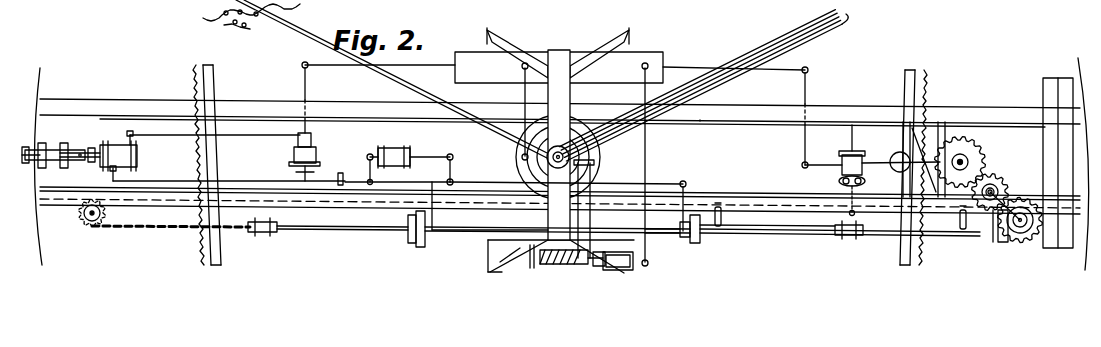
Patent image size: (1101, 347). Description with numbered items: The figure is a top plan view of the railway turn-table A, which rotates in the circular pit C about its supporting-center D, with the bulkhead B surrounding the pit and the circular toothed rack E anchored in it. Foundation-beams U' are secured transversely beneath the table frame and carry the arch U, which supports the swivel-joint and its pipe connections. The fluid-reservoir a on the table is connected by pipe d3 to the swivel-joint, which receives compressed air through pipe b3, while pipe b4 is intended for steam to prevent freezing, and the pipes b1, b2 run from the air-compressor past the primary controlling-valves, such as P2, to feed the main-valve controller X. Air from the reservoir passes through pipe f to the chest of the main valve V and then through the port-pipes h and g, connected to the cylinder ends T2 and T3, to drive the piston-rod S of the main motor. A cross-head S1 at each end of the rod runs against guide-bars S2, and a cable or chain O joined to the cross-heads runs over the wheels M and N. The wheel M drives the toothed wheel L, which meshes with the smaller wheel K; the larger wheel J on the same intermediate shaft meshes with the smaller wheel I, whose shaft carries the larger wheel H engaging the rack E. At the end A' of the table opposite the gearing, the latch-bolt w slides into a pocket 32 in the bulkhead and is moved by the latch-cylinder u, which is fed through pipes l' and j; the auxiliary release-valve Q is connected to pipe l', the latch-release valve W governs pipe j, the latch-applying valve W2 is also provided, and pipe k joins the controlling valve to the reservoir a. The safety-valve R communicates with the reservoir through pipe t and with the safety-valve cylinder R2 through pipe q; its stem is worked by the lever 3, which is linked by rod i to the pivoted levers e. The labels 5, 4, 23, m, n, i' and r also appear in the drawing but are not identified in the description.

The end of the table A' is at (557, 166).
The bulkhead B is at (40, 238).
The circular pit C is at (471, 3).
The supporting-center D is at (542, 3).
The toothed wheel L is at (1026, 244).
The wheel M is at (1008, 240).
The circular toothed rack E is at (194, 82).
The flexible vine/cable 5 is at (245, 16).
The cable connection 4 is at (232, 30).
The fluid-reservoir a is at (557, 58).
The foundation-beams U' is at (559, 149).
The main valve V is at (510, 36).
The arch U is at (558, 145).
The pipe d3 is at (520, 70).
The pipe f is at (646, 150).
The pipe b1 is at (750, 56).
The pipe b2 is at (790, 38).
The pipe b3 is at (822, 28).
The pipe b4 is at (711, 81).
The pipe k is at (308, 92).
The latch-applying valve W2 is at (290, 160).
The valve base 23 is at (288, 173).
The pipe j is at (176, 136).
The pipe l' is at (227, 167).
The latch-cylinder u is at (113, 146).
The latch-bolt w is at (55, 150).
The pocket 32 is at (22, 163).
The auxiliary release-valve Q is at (340, 174).
The latch-release valve W is at (397, 146).
The pipe m is at (370, 175).
The rod i is at (431, 168).
The pipe elbow n is at (455, 178).
The piston-rod S is at (338, 231).
The cross-head S1 is at (262, 236).
The end of the cylinder T2 is at (418, 247).
The port-pipe h is at (455, 236).
The end of the cylinder T3 is at (700, 243).
The pipe g is at (678, 236).
The shaft i' is at (840, 224).
The guide-bars S2 is at (785, 235).
The levers e is at (722, 222).
The main-valve controller X is at (562, 224).
The primary controlling-valve P2 is at (590, 268).
The brace r is at (518, 266).
The pipe t is at (800, 93).
The turn-table A is at (711, 144).
The safety-valve R is at (840, 170).
The pipe q is at (858, 179).
The lever 3 is at (856, 192).
The safety-valve cylinder R2 is at (893, 152).
The toothed wheel H is at (986, 150).
The toothed wheel I is at (990, 168).
The toothed wheel J is at (1005, 185).
The toothed wheel K is at (1008, 195).
The wheel N is at (90, 228).
The chain O is at (140, 228).